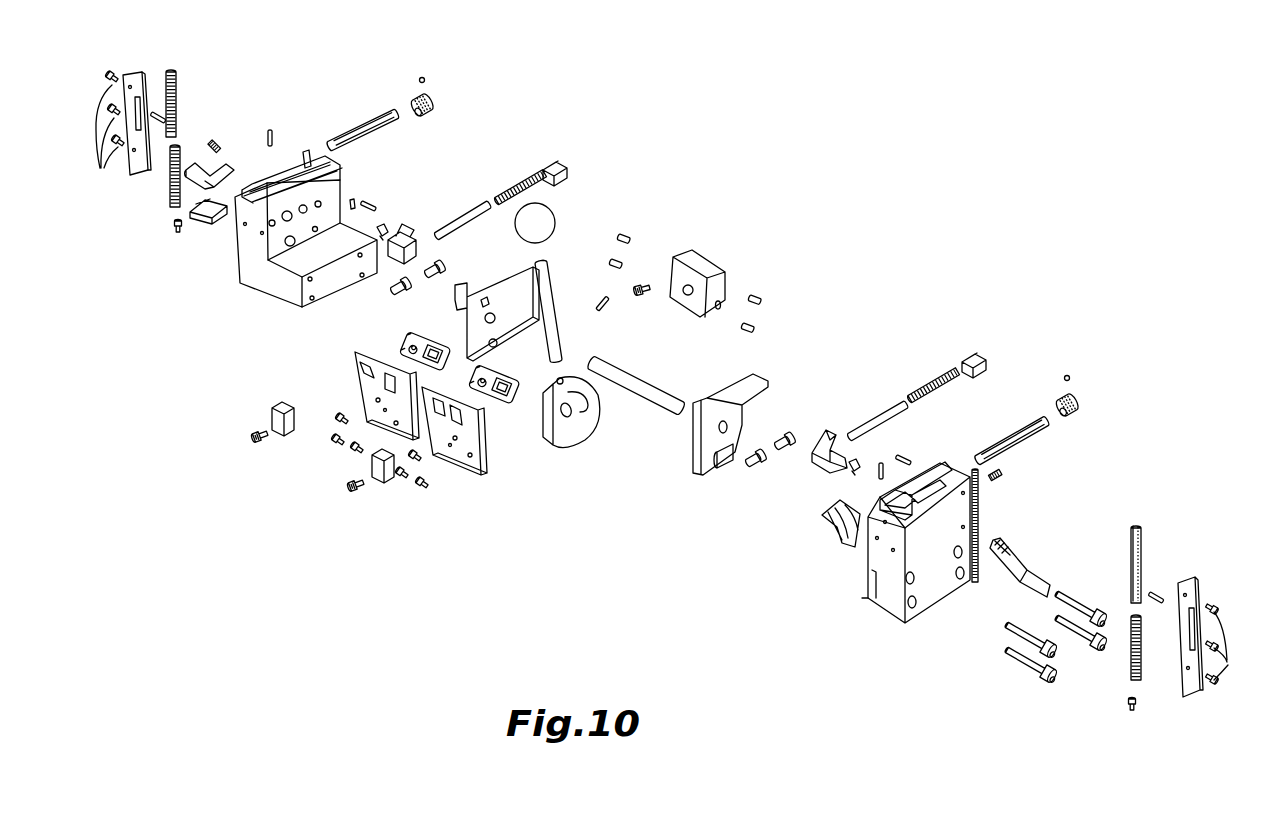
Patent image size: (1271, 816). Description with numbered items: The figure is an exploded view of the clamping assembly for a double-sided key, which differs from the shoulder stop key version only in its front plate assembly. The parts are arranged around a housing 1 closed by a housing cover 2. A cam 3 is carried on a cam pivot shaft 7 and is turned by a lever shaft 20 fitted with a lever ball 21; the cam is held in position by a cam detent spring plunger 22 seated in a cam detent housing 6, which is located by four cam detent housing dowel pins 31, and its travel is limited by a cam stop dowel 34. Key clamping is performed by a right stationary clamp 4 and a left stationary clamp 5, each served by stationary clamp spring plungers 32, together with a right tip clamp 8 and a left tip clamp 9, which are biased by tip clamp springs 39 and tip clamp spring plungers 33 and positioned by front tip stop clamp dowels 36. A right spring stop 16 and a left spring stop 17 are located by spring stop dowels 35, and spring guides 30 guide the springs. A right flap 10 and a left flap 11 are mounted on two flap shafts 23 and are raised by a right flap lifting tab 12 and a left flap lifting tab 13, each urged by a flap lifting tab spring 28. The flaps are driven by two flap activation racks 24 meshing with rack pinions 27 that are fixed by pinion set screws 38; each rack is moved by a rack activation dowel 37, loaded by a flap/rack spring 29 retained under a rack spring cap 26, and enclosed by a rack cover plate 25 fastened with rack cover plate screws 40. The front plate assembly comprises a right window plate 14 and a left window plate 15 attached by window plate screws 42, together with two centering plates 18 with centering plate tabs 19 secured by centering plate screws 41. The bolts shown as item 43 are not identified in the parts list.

The housing 1 is at (273, 290).
The housing cover 2 is at (882, 604).
The cam 3 is at (575, 430).
The right stationary clamp 4 is at (697, 433).
The left stationary clamp 5 is at (497, 280).
The cam detent housing 6 is at (710, 261).
The cam pivot shaft 7 is at (625, 380).
The right tip clamp 8 is at (822, 433).
The left tip clamp 9 is at (412, 230).
The right flap 10 is at (834, 537).
The left flap 11 is at (210, 223).
The right flap lifting tab 12 is at (1012, 546).
The left flap lifting tab 13 is at (230, 169).
The right window plate 14 is at (478, 460).
The left window plate 15 is at (358, 380).
The right spring stop 16 is at (975, 354).
The left spring stop 17 is at (560, 163).
The centering plate 18 is at (420, 342).
The centering plate tab 19 is at (278, 405).
The lever shaft 20 is at (560, 344).
The lever ball 21 is at (546, 216).
The cam detent spring plunger 22 is at (648, 296).
The flap shaft 23 is at (362, 130).
The flap activation rack 24 is at (174, 72).
The rack cover plate 25 is at (143, 177).
The rack spring cap 26 is at (178, 234).
The rack pinion 27 is at (438, 96).
The flap lifting tab spring 28 is at (214, 143).
The flap/rack spring 29 is at (172, 205).
The spring guide 30 is at (467, 222).
The cam detent housing dowel pins 31 is at (612, 265).
The stationary clamp spring plunger 32 is at (438, 265).
The tip clamp spring plunger 33 is at (381, 228).
The cam stop dowel 34 is at (352, 199).
The spring stop dowel 35 is at (370, 203).
The front tip stop clamp dowel 36 is at (273, 133).
The rack activation dowel 37 is at (157, 113).
The pinion set screw 38 is at (419, 80).
The tip clamp spring 39 is at (518, 190).
The rack cover plate screws 40 is at (670, 377).
The centering plate screw 41 is at (253, 432).
The window plate screws 42 is at (354, 450).
The bolt 43 is at (1080, 625).